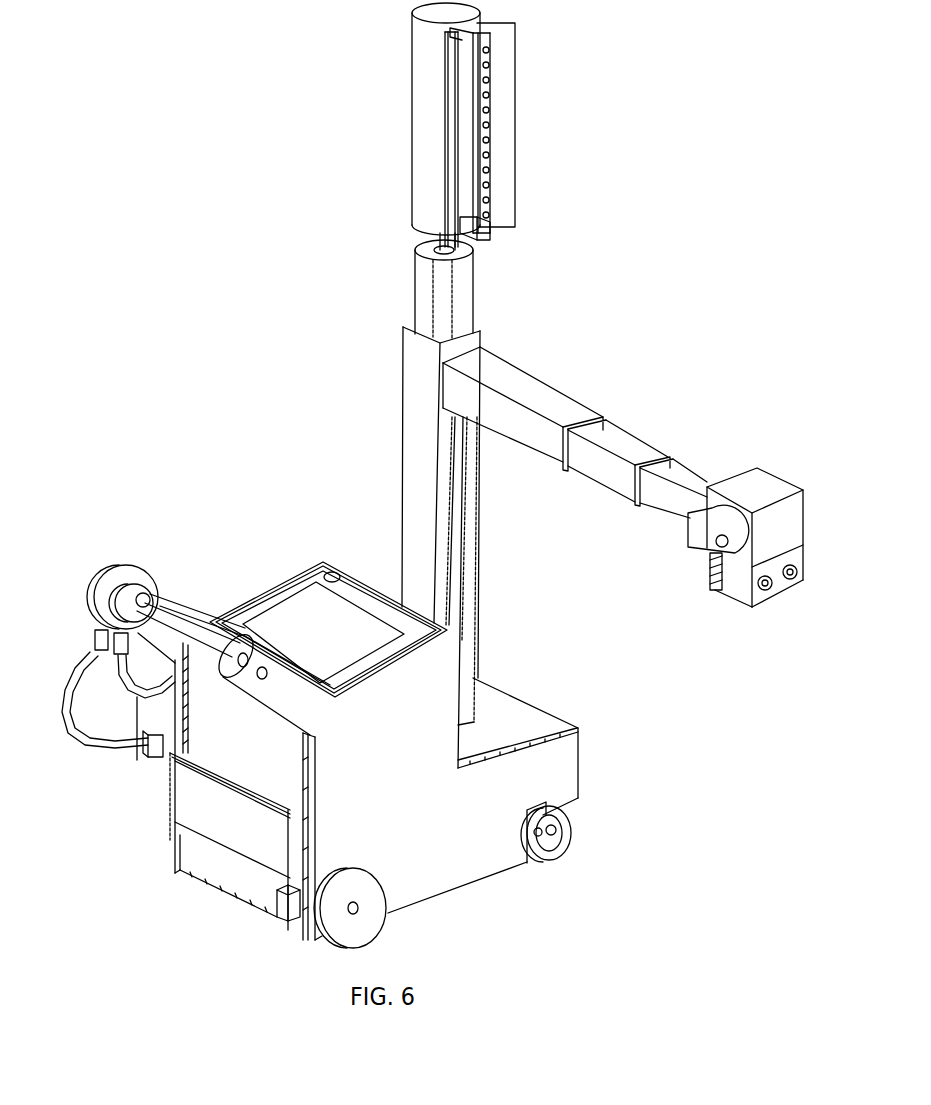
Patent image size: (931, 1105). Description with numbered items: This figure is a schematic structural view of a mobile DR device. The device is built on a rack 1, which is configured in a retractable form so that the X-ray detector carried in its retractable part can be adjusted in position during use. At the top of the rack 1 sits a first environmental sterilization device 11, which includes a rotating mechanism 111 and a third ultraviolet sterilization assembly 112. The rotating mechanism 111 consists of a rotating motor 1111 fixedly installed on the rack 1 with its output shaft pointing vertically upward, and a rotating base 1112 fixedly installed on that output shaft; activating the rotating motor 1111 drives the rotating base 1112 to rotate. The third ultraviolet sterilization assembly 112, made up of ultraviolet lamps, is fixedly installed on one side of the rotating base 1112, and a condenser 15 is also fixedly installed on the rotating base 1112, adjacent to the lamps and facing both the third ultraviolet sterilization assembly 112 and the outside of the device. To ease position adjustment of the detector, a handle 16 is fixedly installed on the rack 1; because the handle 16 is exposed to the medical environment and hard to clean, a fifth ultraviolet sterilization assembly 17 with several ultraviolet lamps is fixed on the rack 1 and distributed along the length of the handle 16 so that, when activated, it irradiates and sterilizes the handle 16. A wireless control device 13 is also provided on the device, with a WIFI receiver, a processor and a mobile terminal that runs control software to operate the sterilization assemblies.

The rack 1 is at (457, 880).
The first environmental sterilization device 11 is at (238, 189).
The rotating mechanism 111 is at (292, 227).
The rotating motor 1111 is at (423, 297).
The rotating base 1112 is at (415, 210).
The third ultraviolet sterilization assembly 112 is at (470, 116).
The wireless control device 13 is at (275, 917).
The condenser 15 is at (498, 175).
The handle 16 is at (712, 576).
The fifth ultraviolet sterilization assembly 17 is at (720, 588).